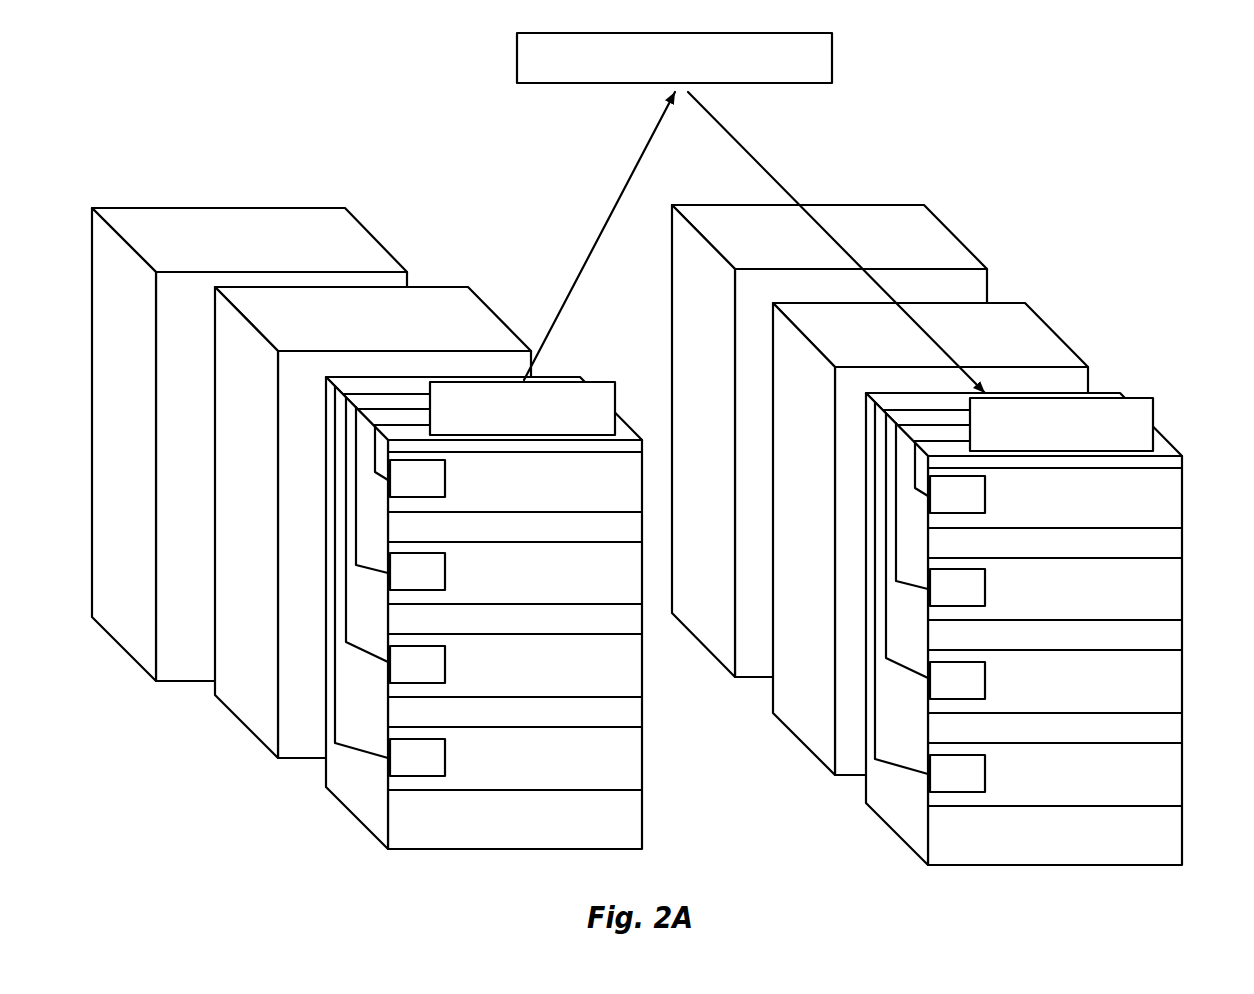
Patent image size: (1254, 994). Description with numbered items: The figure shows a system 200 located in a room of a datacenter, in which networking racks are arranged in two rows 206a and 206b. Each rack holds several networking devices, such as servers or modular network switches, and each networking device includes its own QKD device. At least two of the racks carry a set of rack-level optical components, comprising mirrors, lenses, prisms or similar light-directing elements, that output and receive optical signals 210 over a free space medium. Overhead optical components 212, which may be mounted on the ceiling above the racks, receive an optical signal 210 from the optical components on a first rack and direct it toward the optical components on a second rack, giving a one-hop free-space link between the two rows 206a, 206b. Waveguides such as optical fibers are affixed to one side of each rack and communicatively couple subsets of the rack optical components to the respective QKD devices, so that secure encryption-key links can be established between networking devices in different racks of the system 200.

The system 200 is at (988, 62).
The row 206a is at (227, 162).
The row 206b is at (843, 162).
The optical signal 210 is at (626, 172).
The optical components 212 is at (674, 58).